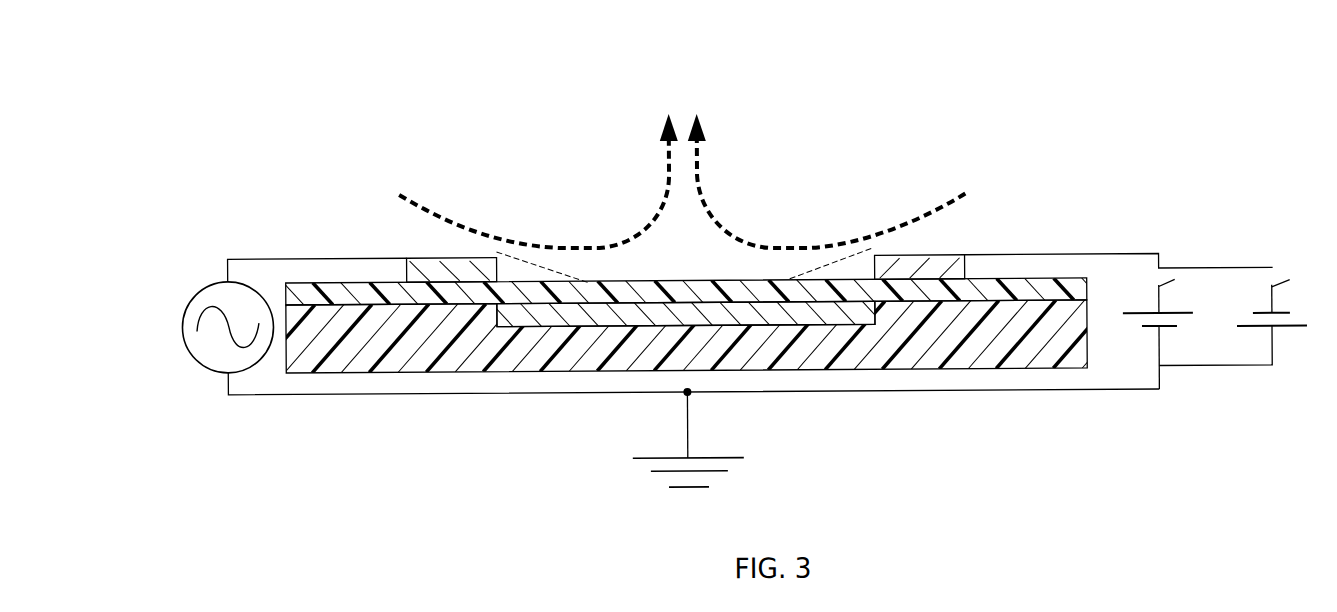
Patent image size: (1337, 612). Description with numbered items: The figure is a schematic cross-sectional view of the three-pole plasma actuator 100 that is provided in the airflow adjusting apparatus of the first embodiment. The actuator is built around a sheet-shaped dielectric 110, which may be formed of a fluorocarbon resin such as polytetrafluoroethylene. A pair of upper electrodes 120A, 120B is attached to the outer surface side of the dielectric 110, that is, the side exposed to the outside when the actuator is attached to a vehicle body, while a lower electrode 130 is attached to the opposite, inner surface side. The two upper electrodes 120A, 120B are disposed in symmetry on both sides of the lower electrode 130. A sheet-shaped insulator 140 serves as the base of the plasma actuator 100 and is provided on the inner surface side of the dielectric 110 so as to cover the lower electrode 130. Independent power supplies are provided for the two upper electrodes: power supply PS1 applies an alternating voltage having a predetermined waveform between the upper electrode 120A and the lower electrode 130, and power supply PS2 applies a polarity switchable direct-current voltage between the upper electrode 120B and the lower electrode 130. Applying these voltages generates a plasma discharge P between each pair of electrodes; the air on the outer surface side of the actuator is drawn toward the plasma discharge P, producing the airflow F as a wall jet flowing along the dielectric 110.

The three-pole plasma actuator 100 is at (345, 155).
The dielectric 110 is at (383, 283).
The upper electrode 120A is at (447, 261).
The upper electrode 120B is at (927, 260).
The lower electrode 130 is at (790, 326).
The insulator 140 is at (919, 371).
The plasma discharge P is at (532, 258).
The airflow F is at (718, 240).
The power supply PS1 is at (197, 296).
The power supply PS2 is at (1230, 264).